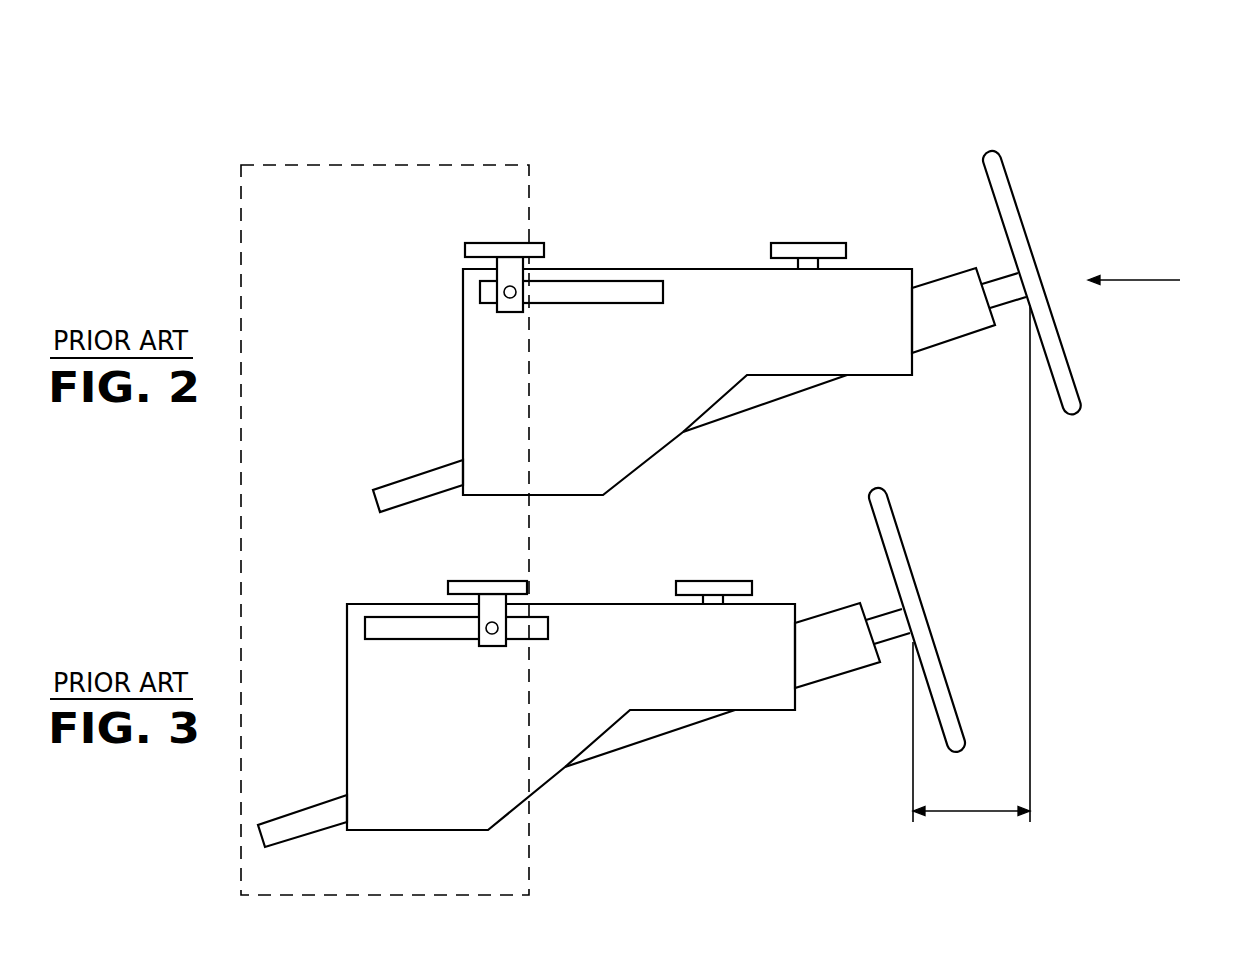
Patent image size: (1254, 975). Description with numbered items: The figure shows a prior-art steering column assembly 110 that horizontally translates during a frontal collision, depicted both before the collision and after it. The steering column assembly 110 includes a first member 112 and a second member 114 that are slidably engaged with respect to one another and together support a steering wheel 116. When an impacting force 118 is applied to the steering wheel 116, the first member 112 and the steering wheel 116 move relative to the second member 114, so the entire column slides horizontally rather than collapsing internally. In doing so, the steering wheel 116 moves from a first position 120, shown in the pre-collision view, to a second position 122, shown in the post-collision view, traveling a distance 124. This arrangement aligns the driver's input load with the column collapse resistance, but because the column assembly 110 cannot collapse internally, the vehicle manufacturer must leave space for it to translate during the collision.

In FIG. 2, the steering column assembly 110 is at (683, 147).
In FIG. 3, the steering column assembly 110 is at (643, 778).
In FIG. 2, the first member 112 is at (727, 282).
In FIG. 3, the first member 112 is at (753, 700).
In FIG. 2, the second member 114 is at (509, 250).
In FIG. 3, the second member 114 is at (512, 587).
In FIG. 2, the steering wheel 116 is at (1073, 376).
In FIG. 3, the steering wheel 116 is at (940, 667).
In FIG. 2, the impacting force 118 is at (1180, 280).
In FIG. 2, the first position 120 is at (1050, 198).
In FIG. 3, the second position 122 is at (902, 512).
In FIG. 3, the distance 124 is at (971, 589).